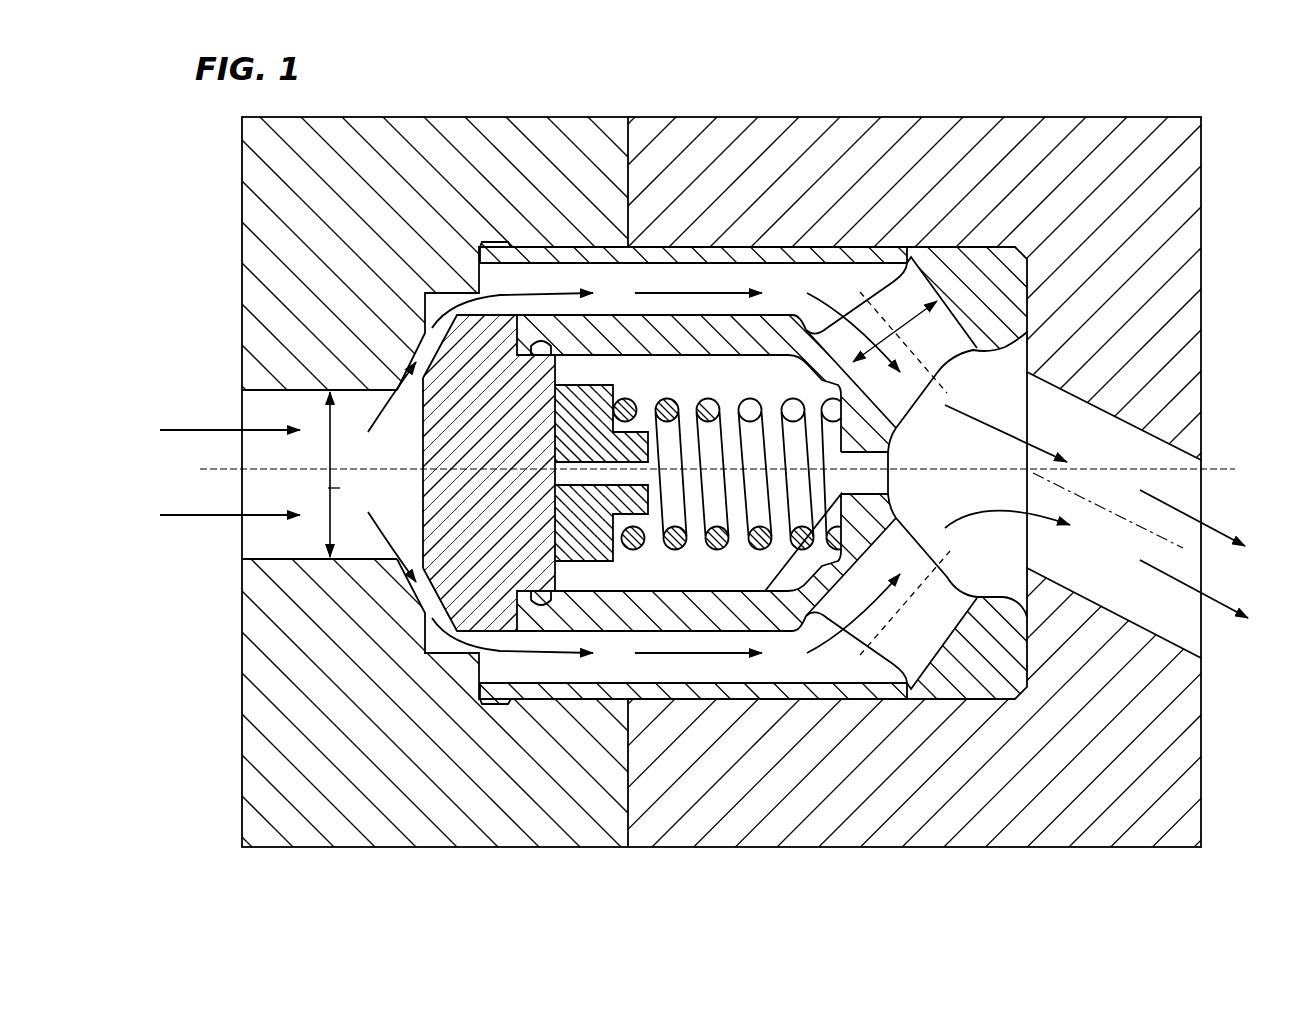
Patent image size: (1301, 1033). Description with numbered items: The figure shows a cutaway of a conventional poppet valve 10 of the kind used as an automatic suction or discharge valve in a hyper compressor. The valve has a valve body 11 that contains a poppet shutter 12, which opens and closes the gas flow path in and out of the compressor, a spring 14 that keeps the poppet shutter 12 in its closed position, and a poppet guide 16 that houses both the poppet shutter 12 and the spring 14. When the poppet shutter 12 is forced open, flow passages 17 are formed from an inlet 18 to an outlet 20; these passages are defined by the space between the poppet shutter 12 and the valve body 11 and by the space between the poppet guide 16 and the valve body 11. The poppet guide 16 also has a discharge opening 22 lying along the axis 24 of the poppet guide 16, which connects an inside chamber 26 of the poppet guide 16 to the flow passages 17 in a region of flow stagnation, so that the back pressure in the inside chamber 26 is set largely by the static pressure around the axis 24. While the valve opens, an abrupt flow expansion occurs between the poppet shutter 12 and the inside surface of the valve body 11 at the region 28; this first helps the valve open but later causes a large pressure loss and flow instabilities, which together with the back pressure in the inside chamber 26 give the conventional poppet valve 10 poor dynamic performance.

The conventional poppet valve 10 is at (993, 95).
The valve body 11 is at (1043, 140).
The poppet shutter 12 is at (460, 330).
The spring 14 is at (704, 398).
The poppet guide 16 is at (783, 325).
The flow passages 17 is at (607, 280).
The inlet 18 is at (262, 533).
The outlet 20 is at (1180, 492).
The discharge opening 22 is at (868, 462).
The axis 24 is at (1240, 466).
The inside chamber 26 is at (800, 383).
The abrupt flow expansion region 28 is at (432, 328).